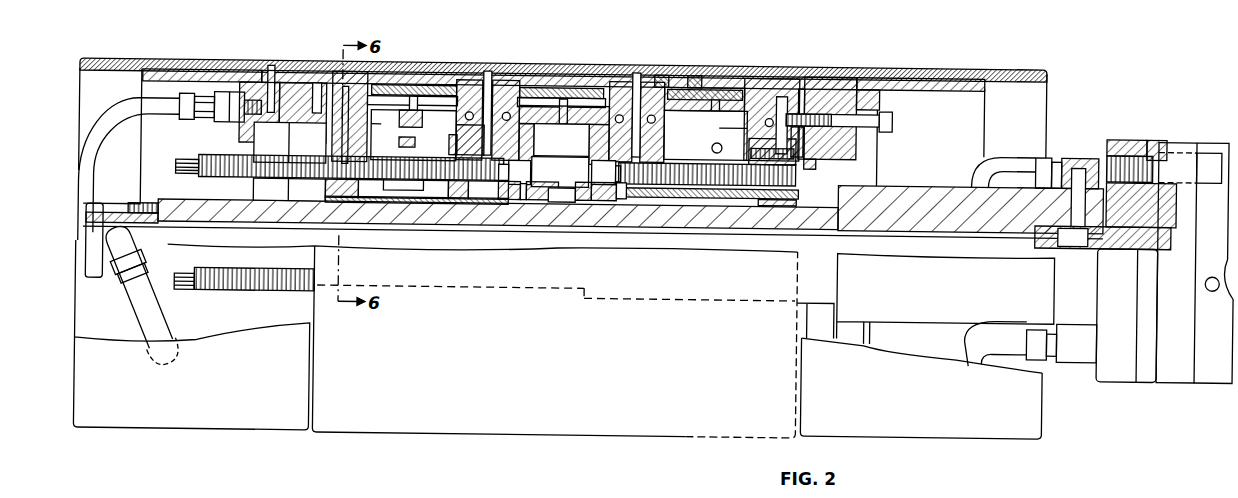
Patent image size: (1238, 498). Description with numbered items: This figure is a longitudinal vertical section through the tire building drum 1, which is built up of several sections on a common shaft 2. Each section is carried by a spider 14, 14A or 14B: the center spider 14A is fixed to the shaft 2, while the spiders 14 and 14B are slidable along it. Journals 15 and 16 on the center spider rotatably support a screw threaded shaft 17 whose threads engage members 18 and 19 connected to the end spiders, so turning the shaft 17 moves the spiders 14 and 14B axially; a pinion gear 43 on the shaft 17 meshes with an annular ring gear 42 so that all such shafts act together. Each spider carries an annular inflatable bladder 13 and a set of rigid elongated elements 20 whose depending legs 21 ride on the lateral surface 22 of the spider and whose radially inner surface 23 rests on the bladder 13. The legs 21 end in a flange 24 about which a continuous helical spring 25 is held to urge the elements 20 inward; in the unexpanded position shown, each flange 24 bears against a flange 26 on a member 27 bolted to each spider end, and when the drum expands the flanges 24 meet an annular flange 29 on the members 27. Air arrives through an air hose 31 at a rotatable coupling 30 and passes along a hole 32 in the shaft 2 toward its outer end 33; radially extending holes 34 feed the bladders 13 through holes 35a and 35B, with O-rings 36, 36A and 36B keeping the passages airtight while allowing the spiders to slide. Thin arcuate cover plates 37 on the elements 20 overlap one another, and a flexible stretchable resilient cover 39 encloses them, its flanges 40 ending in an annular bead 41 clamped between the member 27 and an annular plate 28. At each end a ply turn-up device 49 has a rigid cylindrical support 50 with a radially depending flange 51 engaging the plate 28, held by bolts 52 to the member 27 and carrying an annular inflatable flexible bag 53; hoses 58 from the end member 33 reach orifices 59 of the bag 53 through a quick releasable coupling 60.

The drum 1 is at (1040, 420).
The shaft 2 is at (938, 182).
The annular inflatable bladder 13 is at (425, 80).
The spider 14 is at (456, 142).
The center spider 14A is at (501, 99).
The spider 14B is at (771, 75).
The journal 15 is at (612, 198).
The journal 16 is at (518, 199).
The screw threaded shaft 17 is at (232, 154).
The member 18 is at (393, 200).
The member 19 is at (680, 196).
The rigid elongated element 20 is at (395, 67).
The depending leg 21 is at (380, 100).
The lateral surface 22 is at (392, 121).
The radially inner surface 23 is at (450, 82).
The flange 24 is at (340, 130).
The helical spring 25 is at (766, 114).
The flange 26 is at (785, 126).
The member 27 is at (494, 69).
The annular plate 28 is at (330, 121).
The annular flange 29 is at (641, 67).
The rotatable coupling 30 is at (1128, 125).
The air hose 31 is at (1210, 268).
The hole 32 is at (565, 222).
The outer end 33 is at (100, 274).
The radially extending hole 34 is at (527, 208).
The hole 35a is at (415, 198).
The hole 35B is at (415, 136).
The O-ring 36 is at (502, 200).
The O-ring 36A is at (600, 198).
The O-ring 36B is at (650, 197).
The cover plate 37 is at (662, 64).
The flexible stretchable resilient cover 39 is at (695, 64).
The flange 40 is at (325, 79).
The annular bead 41 is at (836, 69).
The annular ring gear 42 is at (560, 188).
The pinion gear 43 is at (562, 153).
The ply turn-up device 49 is at (133, 58).
The rigid cylindrical support 50 is at (215, 68).
The radially depending flange 51 is at (880, 92).
The bolt 52 is at (895, 113).
The annular inflatable flexible bag 53 is at (100, 58).
The hose 58 is at (118, 116).
The orifice 59 is at (277, 65).
The quick releasable coupling 60 is at (210, 111).